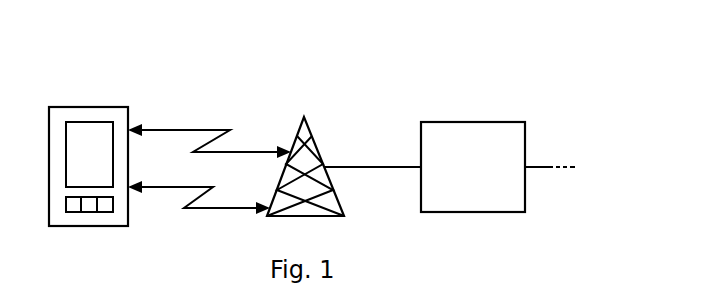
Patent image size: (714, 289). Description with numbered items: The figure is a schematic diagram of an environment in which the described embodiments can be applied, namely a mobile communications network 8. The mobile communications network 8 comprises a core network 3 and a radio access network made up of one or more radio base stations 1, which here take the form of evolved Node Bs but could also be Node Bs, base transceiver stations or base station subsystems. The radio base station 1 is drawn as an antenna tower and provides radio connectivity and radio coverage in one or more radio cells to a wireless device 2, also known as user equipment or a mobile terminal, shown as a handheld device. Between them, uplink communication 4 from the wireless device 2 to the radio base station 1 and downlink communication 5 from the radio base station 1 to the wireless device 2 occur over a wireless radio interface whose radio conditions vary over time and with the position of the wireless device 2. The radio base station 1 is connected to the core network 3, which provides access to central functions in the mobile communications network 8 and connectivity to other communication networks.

The radio base station 1 is at (311, 136).
The wireless device 2 is at (85, 107).
The core network 3 is at (465, 163).
The uplink communication 4 is at (248, 150).
The downlink communication 5 is at (163, 188).
The mobile communications network 8 is at (437, 78).